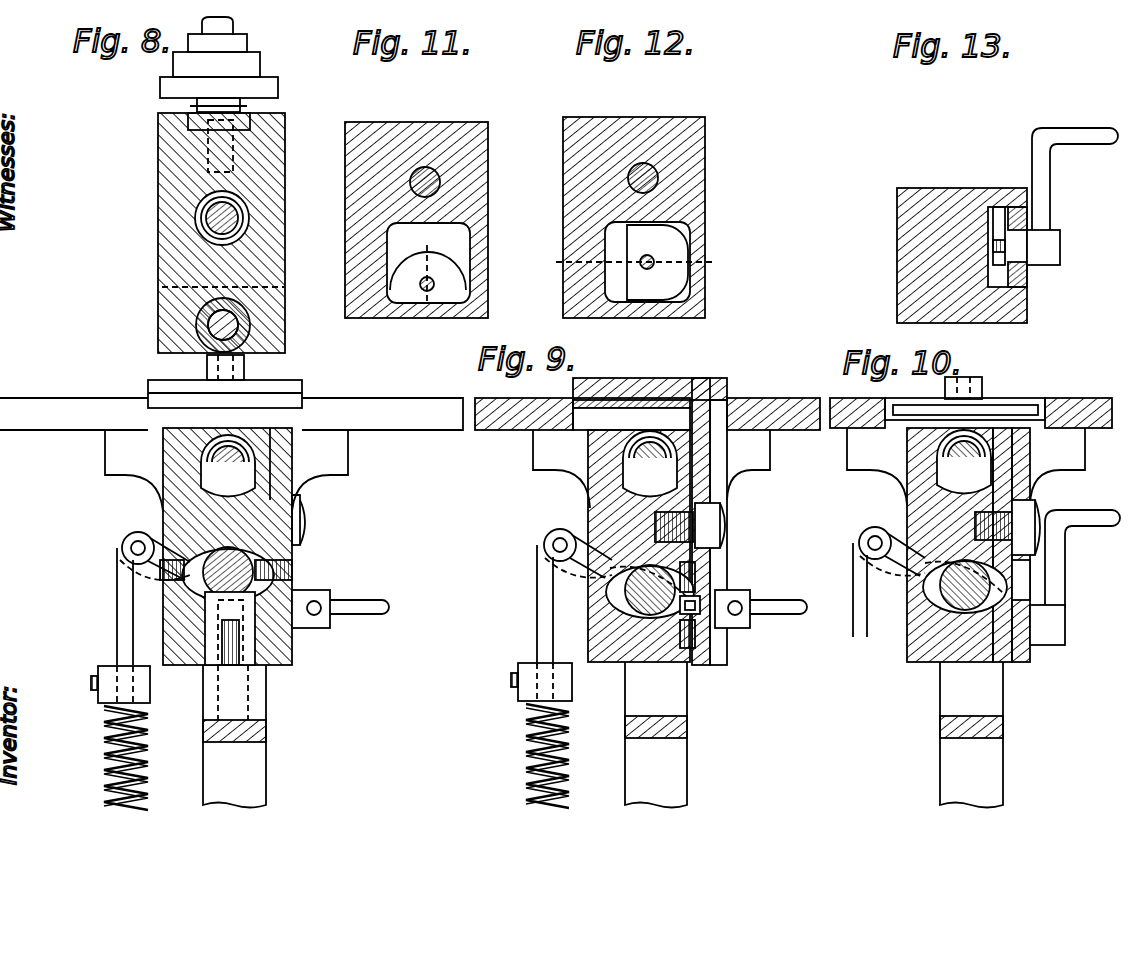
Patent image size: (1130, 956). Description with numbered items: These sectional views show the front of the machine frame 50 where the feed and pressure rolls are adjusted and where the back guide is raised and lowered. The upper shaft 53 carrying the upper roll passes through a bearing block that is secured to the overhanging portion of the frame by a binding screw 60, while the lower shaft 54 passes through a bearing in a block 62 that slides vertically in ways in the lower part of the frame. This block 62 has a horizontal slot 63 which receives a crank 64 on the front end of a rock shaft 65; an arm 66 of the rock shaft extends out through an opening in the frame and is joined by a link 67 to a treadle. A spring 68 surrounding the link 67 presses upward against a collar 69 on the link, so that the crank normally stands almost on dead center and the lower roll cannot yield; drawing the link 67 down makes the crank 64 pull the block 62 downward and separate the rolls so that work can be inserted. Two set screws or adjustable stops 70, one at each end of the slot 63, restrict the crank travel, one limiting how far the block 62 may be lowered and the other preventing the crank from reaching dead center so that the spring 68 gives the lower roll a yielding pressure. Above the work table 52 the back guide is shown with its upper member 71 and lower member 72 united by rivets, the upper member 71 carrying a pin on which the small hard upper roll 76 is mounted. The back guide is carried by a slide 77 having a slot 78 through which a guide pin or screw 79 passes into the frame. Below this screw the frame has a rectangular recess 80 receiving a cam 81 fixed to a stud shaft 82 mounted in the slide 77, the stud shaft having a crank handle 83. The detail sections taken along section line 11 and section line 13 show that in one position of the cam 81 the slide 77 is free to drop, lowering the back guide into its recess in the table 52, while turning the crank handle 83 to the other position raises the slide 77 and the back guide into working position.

In FIG. 9, the section line 11 is at (712, 482).
In FIG. 10, the section line 11 is at (1011, 545).
In FIG. 12, the section line 13 is at (633, 263).
In FIG. 9, the frame 50 is at (597, 503).
In FIG. 10, the frame 50 is at (907, 480).
In FIG. 11, the frame 50 is at (480, 180).
In FIG. 12, the frame 50 is at (570, 145).
In FIG. 13, the frame 50 is at (899, 222).
In FIG. 8, the table 52 is at (45, 432).
In FIG. 9, the table 52 is at (477, 398).
In FIG. 10, the table 52 is at (836, 398).
In FIG. 8, the upper shaft 53 is at (200, 325).
In FIG. 8, the lower shaft 54 is at (201, 462).
In FIG. 9, the lower shaft 54 is at (622, 458).
In FIG. 10, the lower shaft 54 is at (992, 462).
In FIG. 8, the binding screw 60 is at (200, 218).
In FIG. 8, the block 62 is at (167, 507).
In FIG. 8, the horizontal slot 63 is at (203, 585).
In FIG. 8, the crank 64 is at (293, 580).
In FIG. 8, the rock shaft 65 is at (212, 598).
In FIG. 9, the rock shaft 65 is at (625, 608).
In FIG. 10, the rock shaft 65 is at (935, 610).
In FIG. 8, the arm 66 is at (155, 569).
In FIG. 9, the arm 66 is at (598, 567).
In FIG. 10, the arm 66 is at (892, 568).
In FIG. 8, the link 67 is at (117, 612).
In FIG. 9, the link 67 is at (537, 622).
In FIG. 10, the link 67 is at (846, 590).
In FIG. 8, the spring 68 is at (112, 748).
In FIG. 9, the spring 68 is at (572, 735).
In FIG. 8, the collar 69 is at (100, 690).
In FIG. 9, the collar 69 is at (574, 680).
In FIG. 8, the set screws or adjustable stops 70 is at (160, 570).
In FIG. 8, the upper member of back guide 71 is at (305, 385).
In FIG. 9, the upper member of back guide 71 is at (725, 380).
In FIG. 10, the upper member of back guide 71 is at (1035, 398).
In FIG. 9, the lower member of back guide 72 is at (728, 400).
In FIG. 8, the upper roll 76 is at (245, 368).
In FIG. 10, the upper roll 76 is at (982, 386).
In FIG. 8, the slide 77 is at (300, 445).
In FIG. 9, the slide 77 is at (712, 458).
In FIG. 10, the slide 77 is at (1015, 455).
In FIG. 8, the slot 78 is at (302, 497).
In FIG. 9, the slot 78 is at (720, 500).
In FIG. 8, the guide pin or screw 79 is at (303, 520).
In FIG. 9, the guide pin or screw 79 is at (715, 540).
In FIG. 10, the guide pin or screw 79 is at (1015, 533).
In FIG. 9, the rectangular recess 80 is at (712, 652).
In FIG. 11, the rectangular recess 80 is at (428, 263).
In FIG. 12, the rectangular recess 80 is at (646, 262).
In FIG. 13, the rectangular recess 80 is at (996, 275).
In FIG. 9, the cam 81 is at (712, 580).
In FIG. 11, the cam 81 is at (428, 273).
In FIG. 12, the cam 81 is at (657, 262).
In FIG. 13, the cam 81 is at (993, 206).
In FIG. 8, the stud shaft 82 is at (302, 630).
In FIG. 9, the stud shaft 82 is at (748, 595).
In FIG. 10, the stud shaft 82 is at (1022, 632).
In FIG. 13, the stud shaft 82 is at (1018, 248).
In FIG. 8, the crank handle 83 is at (370, 616).
In FIG. 9, the crank handle 83 is at (780, 610).
In FIG. 10, the crank handle 83 is at (1058, 556).
In FIG. 13, the crank handle 83 is at (1042, 140).